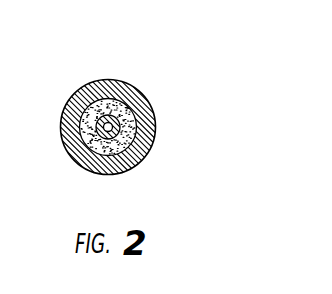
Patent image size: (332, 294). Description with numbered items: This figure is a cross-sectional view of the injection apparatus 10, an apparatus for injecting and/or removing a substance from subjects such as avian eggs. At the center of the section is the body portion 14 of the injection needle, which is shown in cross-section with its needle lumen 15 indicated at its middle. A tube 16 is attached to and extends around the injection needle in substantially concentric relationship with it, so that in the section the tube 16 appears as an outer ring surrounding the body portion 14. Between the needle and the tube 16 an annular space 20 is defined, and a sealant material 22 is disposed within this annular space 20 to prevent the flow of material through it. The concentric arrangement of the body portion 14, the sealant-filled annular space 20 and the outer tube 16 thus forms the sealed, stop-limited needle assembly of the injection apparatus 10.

The injection apparatus 10 is at (131, 106).
The body portion 14 is at (117, 117).
The central lumen 15 is at (98, 135).
The tube 16 is at (156, 133).
The annular space 20 is at (110, 147).
The sealant material 22 is at (99, 107).